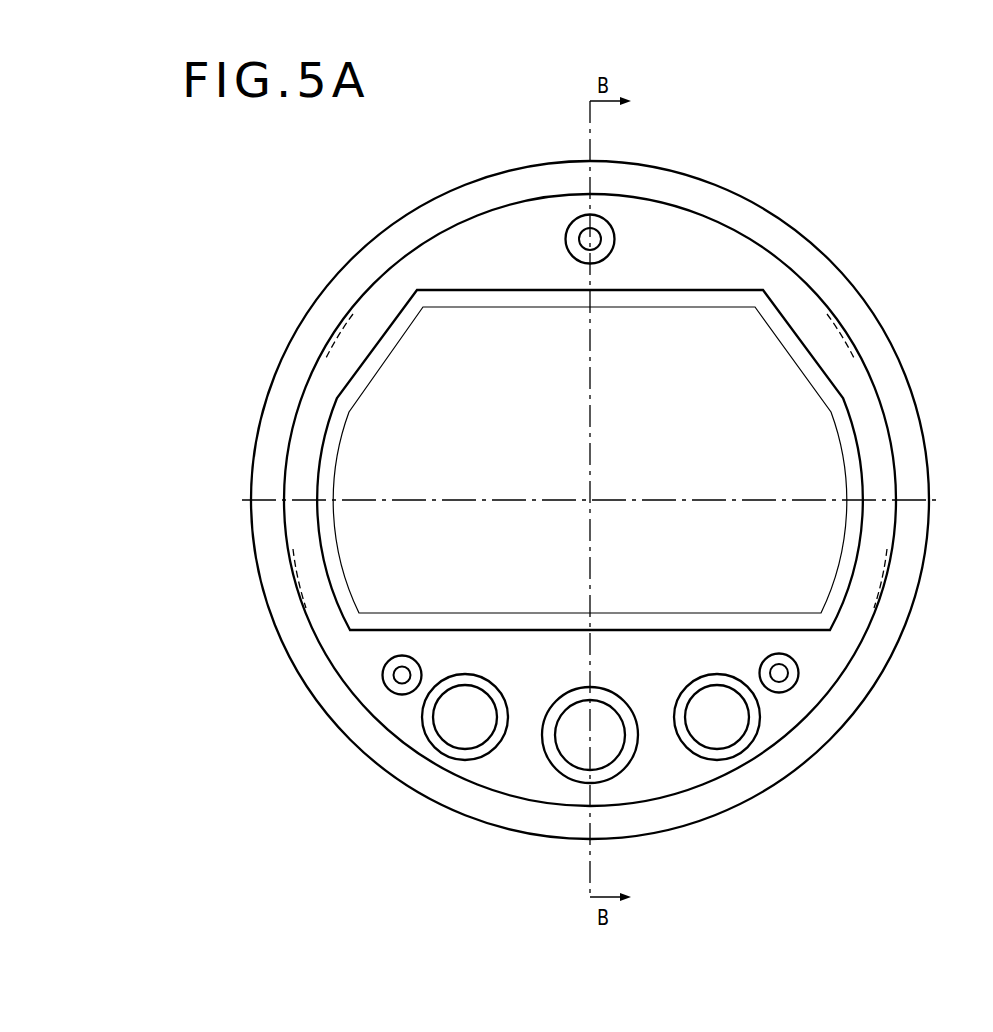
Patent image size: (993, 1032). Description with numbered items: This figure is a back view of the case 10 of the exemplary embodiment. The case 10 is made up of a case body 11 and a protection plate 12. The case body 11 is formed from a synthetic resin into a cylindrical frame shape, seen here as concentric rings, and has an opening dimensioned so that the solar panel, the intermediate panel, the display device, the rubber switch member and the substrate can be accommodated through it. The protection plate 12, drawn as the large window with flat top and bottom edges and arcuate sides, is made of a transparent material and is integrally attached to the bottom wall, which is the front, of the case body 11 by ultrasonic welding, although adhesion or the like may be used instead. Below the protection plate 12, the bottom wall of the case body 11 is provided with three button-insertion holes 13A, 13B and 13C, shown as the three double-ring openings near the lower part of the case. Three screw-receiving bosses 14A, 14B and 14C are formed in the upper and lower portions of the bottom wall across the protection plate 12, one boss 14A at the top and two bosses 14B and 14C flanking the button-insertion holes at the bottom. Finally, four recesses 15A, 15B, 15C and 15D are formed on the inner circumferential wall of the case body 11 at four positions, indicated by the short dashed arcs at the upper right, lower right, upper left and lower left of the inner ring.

The case 10 is at (890, 151).
The case body 11 is at (776, 235).
The protection plate 12 is at (780, 360).
The button-insertion hole 13A is at (717, 749).
The button-insertion hole 13B is at (563, 762).
The button-insertion hole 13C is at (458, 748).
The screw-receiving boss 14A is at (601, 239).
The screw-receiving boss 14B is at (795, 673).
The screw-receiving boss 14C is at (383, 675).
The recess 15A is at (855, 327).
The recess 15B is at (893, 578).
The recess 15C is at (330, 332).
The recess 15D is at (290, 585).